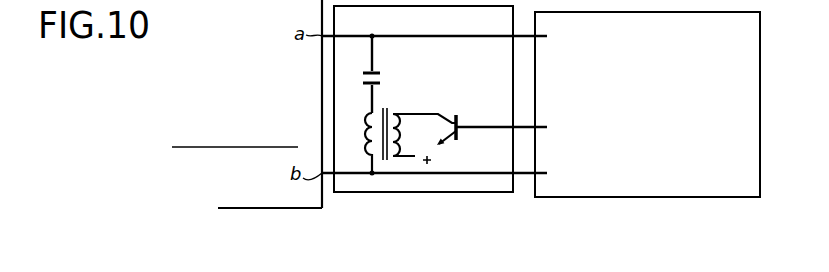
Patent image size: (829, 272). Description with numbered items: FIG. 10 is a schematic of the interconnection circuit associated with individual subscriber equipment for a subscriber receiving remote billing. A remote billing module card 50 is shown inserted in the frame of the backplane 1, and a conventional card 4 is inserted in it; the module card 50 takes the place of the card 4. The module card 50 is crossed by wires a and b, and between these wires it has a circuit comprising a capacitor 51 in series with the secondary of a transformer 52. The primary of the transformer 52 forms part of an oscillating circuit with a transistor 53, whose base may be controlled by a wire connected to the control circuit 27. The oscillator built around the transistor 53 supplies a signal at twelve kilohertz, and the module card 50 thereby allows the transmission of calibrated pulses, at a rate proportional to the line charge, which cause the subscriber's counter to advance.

The backplane 1 is at (283, 202).
The conventional card 4 is at (647, 190).
The control circuit 27 is at (500, 127).
The remote billing module card 50 is at (450, 192).
The capacitor 51 is at (383, 75).
The transformer 52 is at (384, 108).
The transistor 53 is at (458, 133).